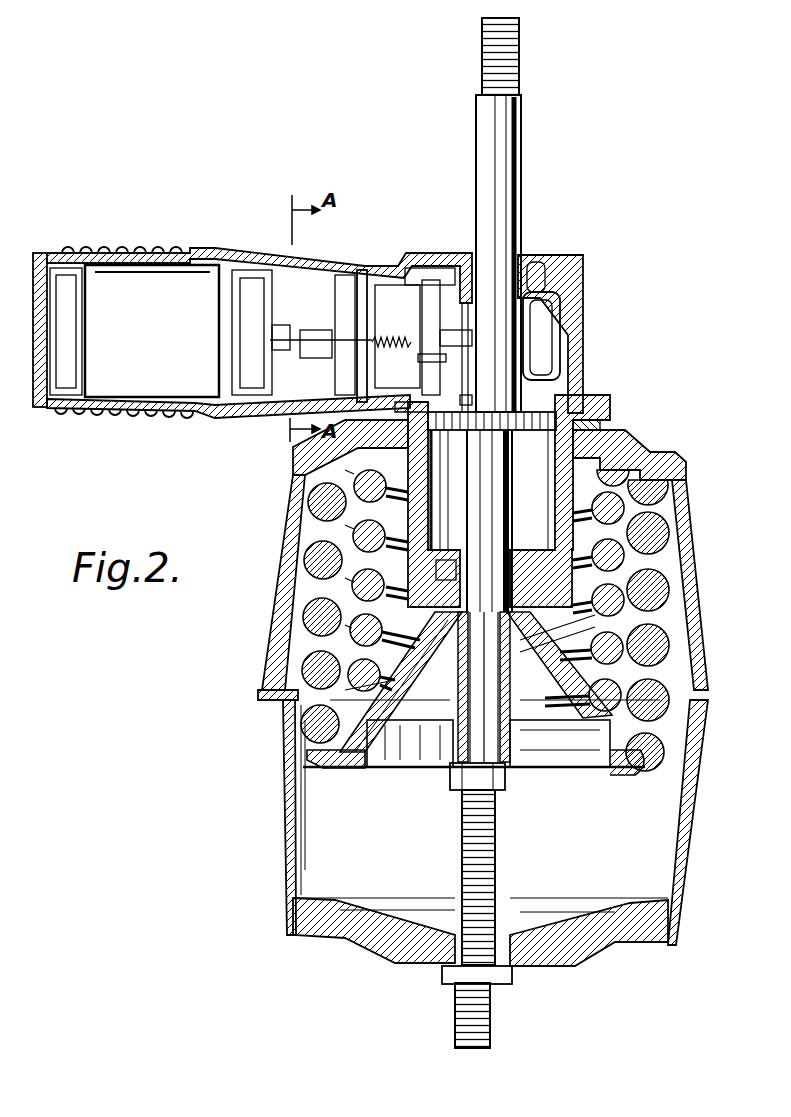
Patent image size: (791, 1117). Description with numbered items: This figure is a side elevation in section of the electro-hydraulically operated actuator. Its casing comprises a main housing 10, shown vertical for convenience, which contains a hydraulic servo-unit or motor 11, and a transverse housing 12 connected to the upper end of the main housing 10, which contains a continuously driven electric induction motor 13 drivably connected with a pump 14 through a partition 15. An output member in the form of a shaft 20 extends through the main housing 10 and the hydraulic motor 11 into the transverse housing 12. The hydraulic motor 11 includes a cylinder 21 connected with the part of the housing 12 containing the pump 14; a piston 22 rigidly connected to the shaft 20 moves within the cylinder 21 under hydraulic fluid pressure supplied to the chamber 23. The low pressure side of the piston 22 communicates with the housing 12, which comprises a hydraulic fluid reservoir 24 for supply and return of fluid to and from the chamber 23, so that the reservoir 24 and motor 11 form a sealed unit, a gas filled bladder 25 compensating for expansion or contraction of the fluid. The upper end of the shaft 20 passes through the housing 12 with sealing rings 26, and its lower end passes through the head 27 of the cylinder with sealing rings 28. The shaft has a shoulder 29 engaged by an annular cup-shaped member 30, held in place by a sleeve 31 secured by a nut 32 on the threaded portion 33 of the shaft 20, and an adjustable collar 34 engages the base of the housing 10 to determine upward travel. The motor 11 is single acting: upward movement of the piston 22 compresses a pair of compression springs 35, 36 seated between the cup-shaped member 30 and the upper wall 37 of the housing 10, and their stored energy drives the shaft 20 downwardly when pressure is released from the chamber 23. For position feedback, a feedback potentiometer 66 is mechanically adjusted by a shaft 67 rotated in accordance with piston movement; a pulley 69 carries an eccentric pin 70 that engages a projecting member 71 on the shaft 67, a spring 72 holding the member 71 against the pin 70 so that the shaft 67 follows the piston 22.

The main housing 10 is at (680, 790).
The hydraulic servo-unit or motor 11 is at (642, 512).
The transverse housing 12 is at (582, 302).
The electric induction motor 13 is at (175, 390).
The pump 14 is at (412, 290).
The partition 15 is at (364, 290).
The shaft 20 is at (512, 152).
The cylinder 21 is at (620, 458).
The piston 22 is at (566, 402).
The chamber 23 is at (585, 426).
The hydraulic fluid reservoir 24 is at (563, 340).
The gas filled bladder 25 is at (552, 348).
The sealing rings 26 is at (528, 266).
The head of the cylinder 27 is at (533, 568).
The sealing rings 28 is at (559, 665).
The shoulder 29 is at (401, 682).
The annular cup-shaped member 30 is at (592, 768).
The sleeve 31 is at (452, 742).
The nut 32 is at (503, 790).
The threaded portion 33 is at (498, 858).
The adjustable collar 34 is at (512, 985).
The compression spring 35 is at (625, 622).
The compression spring 36 is at (662, 634).
The upper wall 37 is at (345, 443).
The feedback potentiometer 66 is at (295, 332).
The shaft 67 is at (434, 345).
The pulley 69 is at (480, 282).
The eccentric pin 70 is at (492, 430).
The projecting member 71 is at (430, 362).
The spring 72 is at (403, 342).